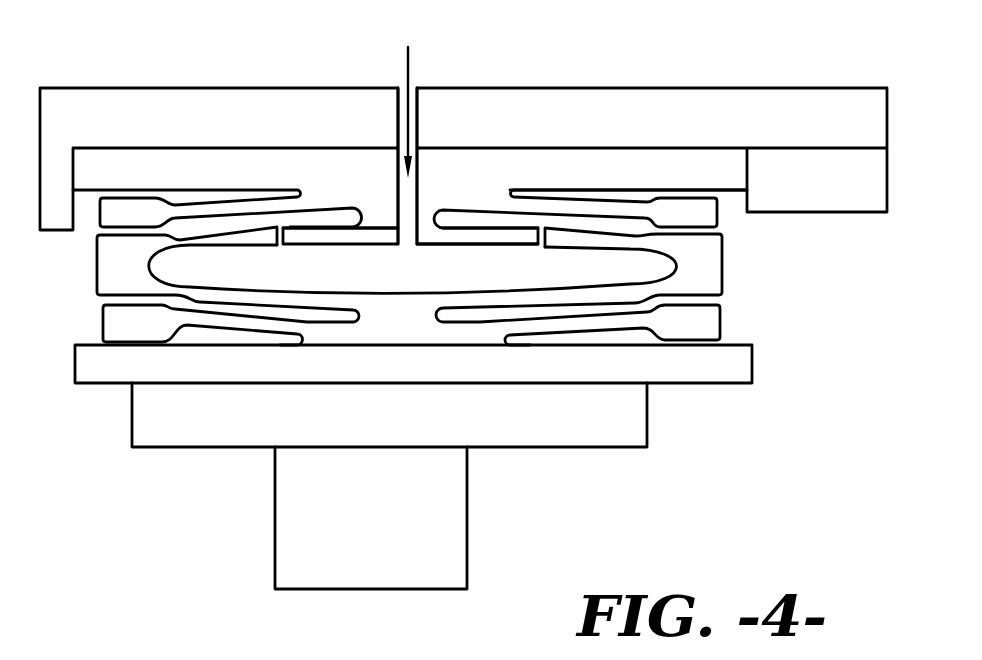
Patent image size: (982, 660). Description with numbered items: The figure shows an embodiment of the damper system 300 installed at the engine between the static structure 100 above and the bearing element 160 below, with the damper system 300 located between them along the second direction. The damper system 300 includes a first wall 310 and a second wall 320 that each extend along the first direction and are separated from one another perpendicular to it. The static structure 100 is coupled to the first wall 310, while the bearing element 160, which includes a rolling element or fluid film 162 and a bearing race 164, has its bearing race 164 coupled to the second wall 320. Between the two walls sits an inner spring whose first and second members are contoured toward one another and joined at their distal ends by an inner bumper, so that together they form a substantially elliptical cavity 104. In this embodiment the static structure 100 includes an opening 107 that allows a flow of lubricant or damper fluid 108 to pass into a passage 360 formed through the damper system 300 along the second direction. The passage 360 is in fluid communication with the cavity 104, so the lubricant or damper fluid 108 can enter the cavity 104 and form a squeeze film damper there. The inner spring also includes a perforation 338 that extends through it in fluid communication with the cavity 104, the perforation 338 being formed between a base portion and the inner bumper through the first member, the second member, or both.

The static structure 100 is at (463, 136).
The first wall 310 is at (643, 167).
The opening 107 is at (405, 78).
The lubricant or damper fluid 108 is at (410, 117).
The passage 360 is at (408, 197).
The damper system 300 is at (454, 362).
The perforation 338 is at (281, 256).
The cavity 104 is at (500, 270).
The second wall 320 is at (698, 370).
The bearing race 164 is at (583, 448).
The rolling element or fluid film 162 is at (393, 575).
The bearing element 160 is at (438, 493).